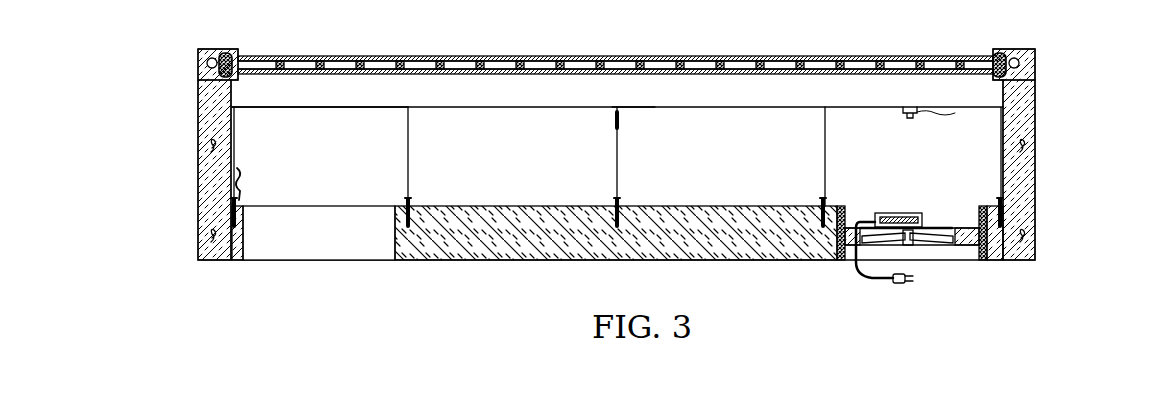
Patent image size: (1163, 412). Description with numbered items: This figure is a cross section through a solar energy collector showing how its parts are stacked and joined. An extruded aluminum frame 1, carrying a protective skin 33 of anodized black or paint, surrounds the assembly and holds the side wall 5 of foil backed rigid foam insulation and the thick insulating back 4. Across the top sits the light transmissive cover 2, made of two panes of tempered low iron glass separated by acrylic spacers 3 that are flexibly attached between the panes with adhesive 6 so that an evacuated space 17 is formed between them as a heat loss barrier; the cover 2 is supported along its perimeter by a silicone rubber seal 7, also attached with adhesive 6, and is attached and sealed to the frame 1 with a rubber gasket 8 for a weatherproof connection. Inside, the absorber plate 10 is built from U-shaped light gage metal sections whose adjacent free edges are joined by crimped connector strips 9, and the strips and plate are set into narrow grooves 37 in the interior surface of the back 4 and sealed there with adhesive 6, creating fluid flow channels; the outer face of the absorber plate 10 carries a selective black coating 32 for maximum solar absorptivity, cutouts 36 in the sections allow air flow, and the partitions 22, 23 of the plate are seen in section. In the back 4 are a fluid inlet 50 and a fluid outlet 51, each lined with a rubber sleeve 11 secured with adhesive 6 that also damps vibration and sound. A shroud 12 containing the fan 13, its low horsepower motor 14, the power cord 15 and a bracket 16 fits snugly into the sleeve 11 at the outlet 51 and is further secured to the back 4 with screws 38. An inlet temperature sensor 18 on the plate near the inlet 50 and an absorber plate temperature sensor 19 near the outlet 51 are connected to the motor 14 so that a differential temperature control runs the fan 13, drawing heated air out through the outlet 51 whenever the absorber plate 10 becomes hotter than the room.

The frame 1 is at (1036, 92).
The cover 2 is at (820, 57).
The acrylic spacers 3 is at (690, 57).
The back 4 is at (545, 245).
The wall 5 is at (1022, 192).
The adhesive 6 is at (562, 69).
The seal 7 is at (243, 63).
The rubber gasket 8 is at (1008, 55).
The connector strips 9 is at (411, 197).
The absorber plate 10 is at (685, 107).
The rubber sleeve 11 is at (243, 258).
The shroud 12 is at (975, 258).
The fan 13 is at (932, 242).
The motor 14 is at (905, 212).
The power cord 15 is at (866, 278).
The bracket 16 is at (975, 210).
The evacuated space 17 is at (747, 66).
The inlet temperature sensor 18 is at (239, 180).
The absorber plate temperature sensor 19 is at (903, 115).
The partition 22 is at (409, 107).
The inner liner 23 is at (245, 107).
The coating 32 is at (634, 107).
The skin 33 is at (1035, 147).
The cutouts 36 is at (618, 156).
The grooves 37 is at (237, 202).
The screws 38 is at (841, 212).
The fluid inlet 50 is at (323, 244).
The fluid outlet 51 is at (916, 253).